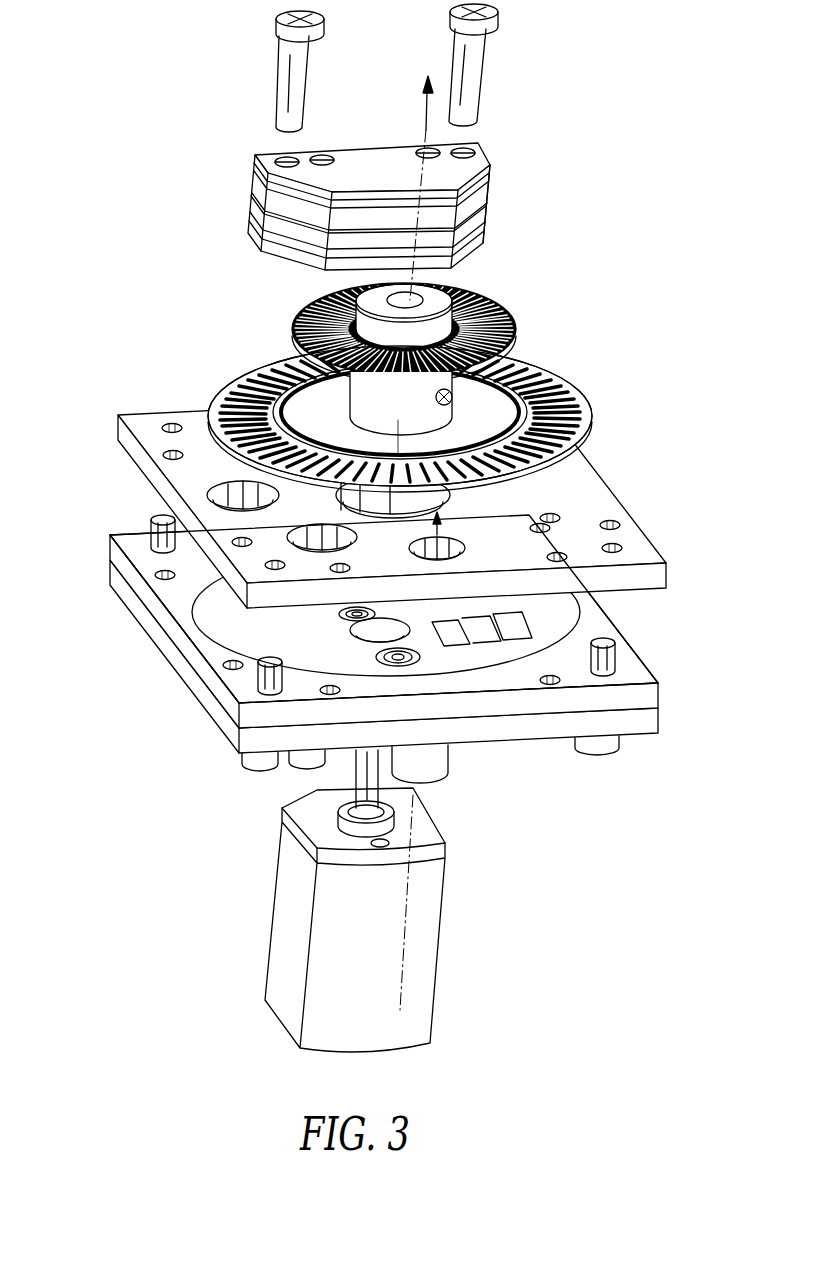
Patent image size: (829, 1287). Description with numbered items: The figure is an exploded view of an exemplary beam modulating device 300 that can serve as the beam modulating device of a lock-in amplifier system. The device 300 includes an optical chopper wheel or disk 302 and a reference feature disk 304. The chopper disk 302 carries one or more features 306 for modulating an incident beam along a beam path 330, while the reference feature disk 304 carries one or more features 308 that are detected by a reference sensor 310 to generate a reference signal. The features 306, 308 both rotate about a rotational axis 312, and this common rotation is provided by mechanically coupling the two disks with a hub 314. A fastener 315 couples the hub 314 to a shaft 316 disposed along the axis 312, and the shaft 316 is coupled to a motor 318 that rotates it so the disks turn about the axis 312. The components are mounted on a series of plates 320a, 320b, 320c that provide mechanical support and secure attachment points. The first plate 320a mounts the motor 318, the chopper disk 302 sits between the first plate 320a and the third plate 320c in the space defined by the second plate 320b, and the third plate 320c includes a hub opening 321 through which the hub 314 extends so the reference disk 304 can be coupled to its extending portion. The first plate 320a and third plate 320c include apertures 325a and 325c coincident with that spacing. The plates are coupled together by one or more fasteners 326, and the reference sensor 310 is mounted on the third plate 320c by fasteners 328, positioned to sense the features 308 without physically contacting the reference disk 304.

The beam modulating device 300 is at (576, 843).
The optical chopper wheel or disk 302 is at (210, 370).
The reference feature disk 304 is at (527, 332).
The features 306 is at (557, 373).
The features 308 is at (485, 293).
The reference sensor 310 is at (504, 172).
The rotational axis 312 is at (424, 124).
The hub 314 is at (360, 387).
The fastener 315 is at (448, 403).
The shaft 316 is at (350, 777).
The motor 318 is at (292, 890).
The first plate 320a is at (162, 647).
The second plate 320b is at (147, 600).
The third plate 320c is at (131, 435).
The hub opening 321 is at (335, 483).
The aperture 325a is at (433, 775).
The aperture 325c is at (452, 538).
The fasteners 326 is at (260, 769).
The fasteners 328 is at (278, 88).
The beam path 330 is at (413, 925).